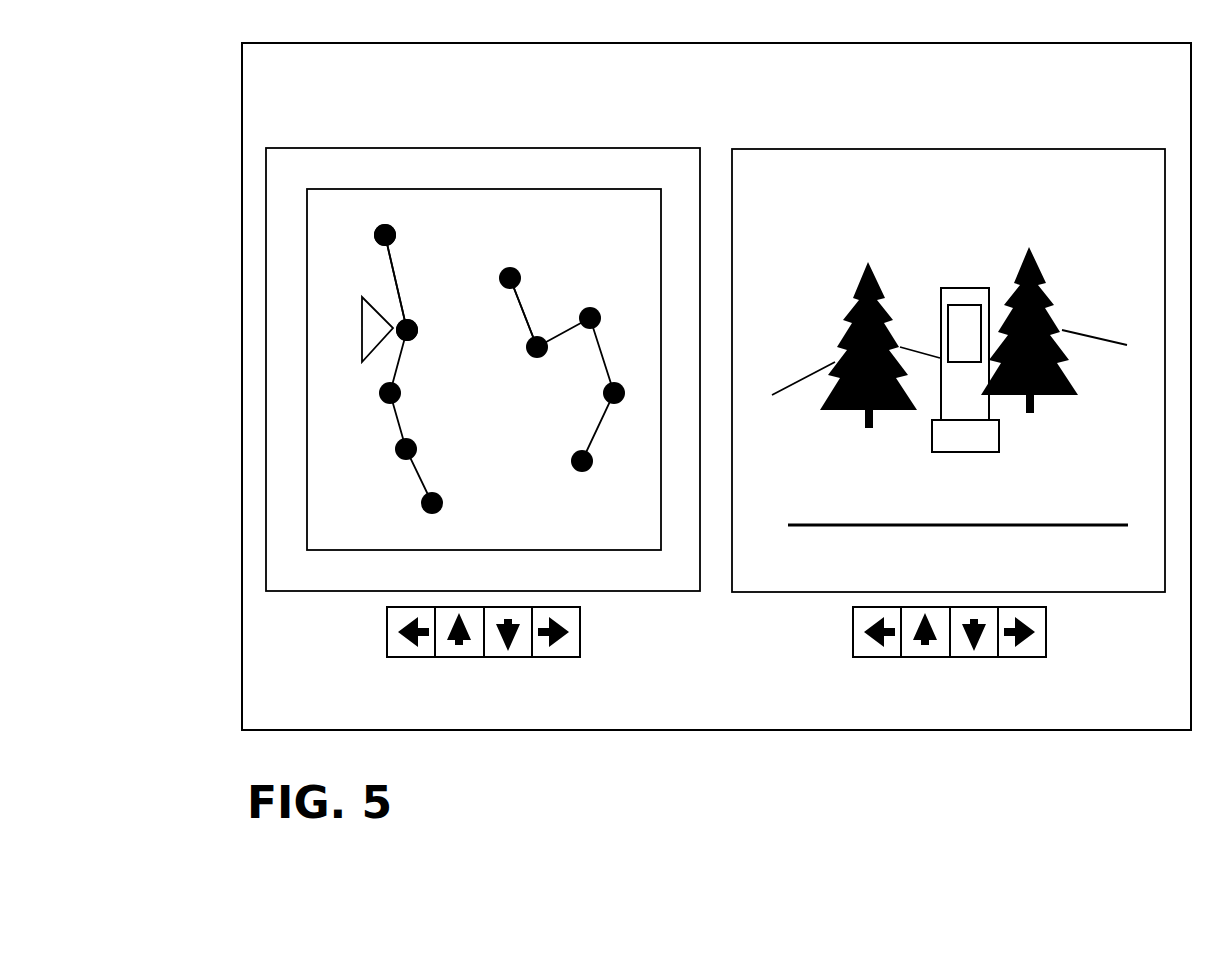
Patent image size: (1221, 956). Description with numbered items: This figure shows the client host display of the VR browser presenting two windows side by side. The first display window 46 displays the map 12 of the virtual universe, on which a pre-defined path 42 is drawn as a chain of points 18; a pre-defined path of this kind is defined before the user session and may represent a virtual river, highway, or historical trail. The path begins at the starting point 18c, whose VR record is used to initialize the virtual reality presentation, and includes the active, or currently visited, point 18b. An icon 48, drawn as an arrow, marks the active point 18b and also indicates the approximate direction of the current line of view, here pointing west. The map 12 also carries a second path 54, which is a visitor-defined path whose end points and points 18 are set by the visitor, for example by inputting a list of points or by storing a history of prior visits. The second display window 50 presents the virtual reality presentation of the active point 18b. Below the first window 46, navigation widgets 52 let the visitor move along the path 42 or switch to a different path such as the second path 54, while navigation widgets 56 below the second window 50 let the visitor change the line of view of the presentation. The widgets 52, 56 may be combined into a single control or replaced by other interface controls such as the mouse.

The map 12 is at (320, 488).
The points 18 is at (582, 461).
The active point 18b is at (400, 335).
The starting point 18c is at (375, 237).
The path 42 is at (400, 297).
The first display window 46 is at (412, 168).
The icon 48 is at (360, 321).
The second display window 50 is at (812, 172).
The navigation widgets 52 is at (387, 640).
The second path 54 is at (528, 322).
The navigation widgets 56 is at (853, 648).